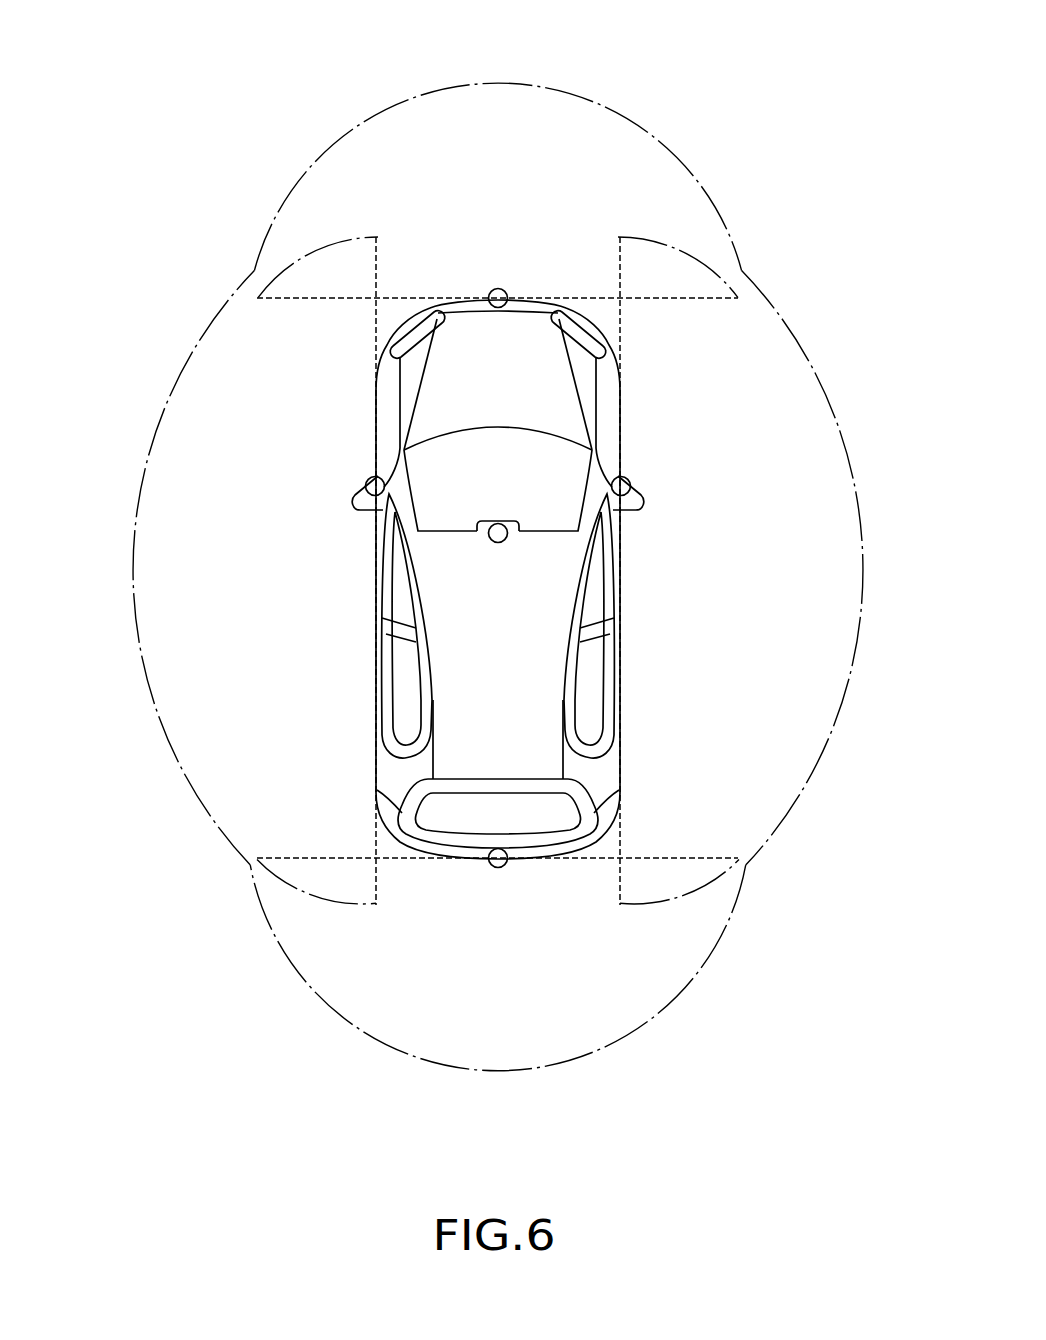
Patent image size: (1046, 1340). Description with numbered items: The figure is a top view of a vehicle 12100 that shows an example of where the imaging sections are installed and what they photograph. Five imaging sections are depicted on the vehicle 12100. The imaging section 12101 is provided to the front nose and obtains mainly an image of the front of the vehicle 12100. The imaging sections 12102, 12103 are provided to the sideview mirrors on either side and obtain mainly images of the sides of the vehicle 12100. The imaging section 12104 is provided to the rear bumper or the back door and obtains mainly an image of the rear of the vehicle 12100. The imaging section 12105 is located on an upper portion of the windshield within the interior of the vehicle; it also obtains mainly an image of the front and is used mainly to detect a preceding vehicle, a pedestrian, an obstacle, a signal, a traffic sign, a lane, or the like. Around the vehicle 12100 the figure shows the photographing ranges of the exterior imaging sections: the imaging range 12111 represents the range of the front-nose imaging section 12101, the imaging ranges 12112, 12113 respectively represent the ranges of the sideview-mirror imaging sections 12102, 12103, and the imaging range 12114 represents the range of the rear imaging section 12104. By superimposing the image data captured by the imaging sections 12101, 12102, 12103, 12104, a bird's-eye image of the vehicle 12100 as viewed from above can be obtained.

The vehicle 12100 is at (385, 405).
The imaging section 12101 is at (498, 288).
The imaging section 12102 is at (364, 487).
The imaging section 12103 is at (632, 487).
The imaging section 12104 is at (498, 868).
The imaging section 12105 is at (505, 541).
The imaging range 12111 is at (498, 86).
The imaging range 12112 is at (184, 355).
The imaging range 12113 is at (812, 355).
The imaging range 12114 is at (498, 1073).